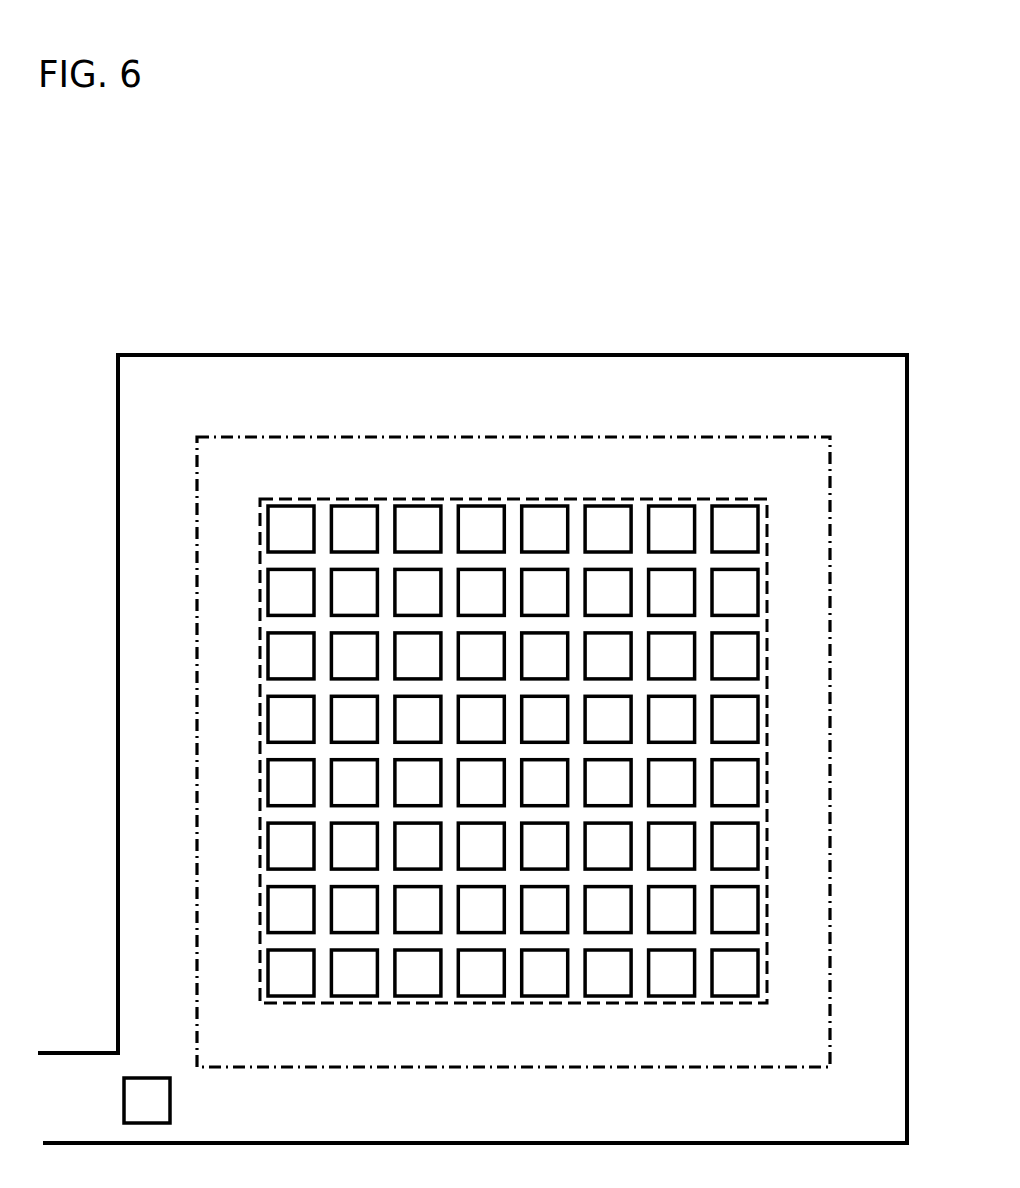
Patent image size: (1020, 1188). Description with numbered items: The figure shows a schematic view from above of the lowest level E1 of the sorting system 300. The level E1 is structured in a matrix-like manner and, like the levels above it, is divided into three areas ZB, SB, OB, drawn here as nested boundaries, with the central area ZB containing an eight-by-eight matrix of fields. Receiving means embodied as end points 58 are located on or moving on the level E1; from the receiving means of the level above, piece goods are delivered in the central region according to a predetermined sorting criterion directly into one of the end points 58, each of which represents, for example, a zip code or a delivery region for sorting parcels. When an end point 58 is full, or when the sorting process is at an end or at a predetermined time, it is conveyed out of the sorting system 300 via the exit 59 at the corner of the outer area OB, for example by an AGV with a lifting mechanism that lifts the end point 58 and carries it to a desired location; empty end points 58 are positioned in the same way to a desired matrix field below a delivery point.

The sorting system 300 is at (885, 168).
The outer area OB is at (766, 400).
The intermediate area SB is at (700, 455).
The central area ZB is at (512, 565).
The lowest level E1 is at (266, 300).
The end point 58 is at (98, 1099).
The exit 59 is at (55, 1050).